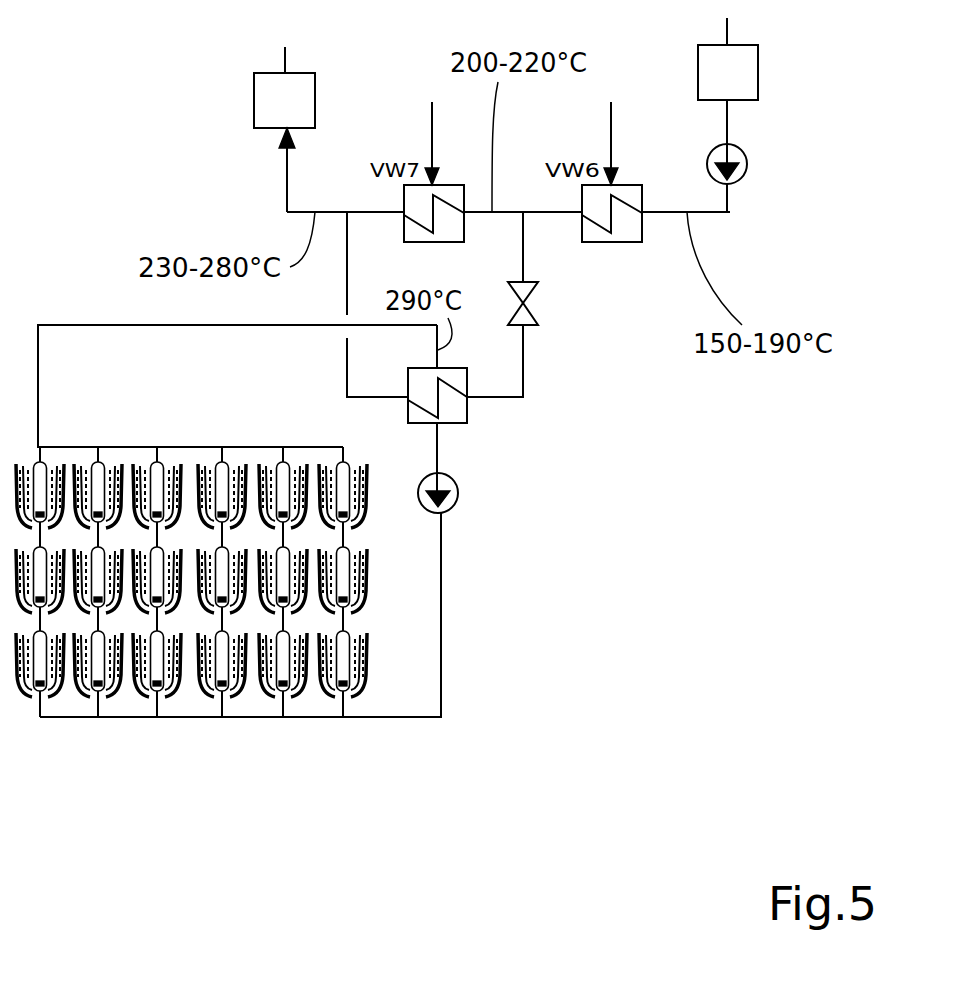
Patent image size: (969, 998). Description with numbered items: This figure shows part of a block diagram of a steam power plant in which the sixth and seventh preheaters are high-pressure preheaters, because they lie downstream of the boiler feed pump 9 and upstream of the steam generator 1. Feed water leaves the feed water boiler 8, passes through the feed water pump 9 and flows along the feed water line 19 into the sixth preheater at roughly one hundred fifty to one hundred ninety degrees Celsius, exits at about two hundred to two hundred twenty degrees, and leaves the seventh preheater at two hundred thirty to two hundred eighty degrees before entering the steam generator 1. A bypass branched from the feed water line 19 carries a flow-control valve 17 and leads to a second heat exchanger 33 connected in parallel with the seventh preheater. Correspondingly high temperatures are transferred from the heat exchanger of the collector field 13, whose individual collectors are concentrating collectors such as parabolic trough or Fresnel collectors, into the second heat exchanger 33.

The steam generator 1 is at (254, 88).
The feed water boiler 8 is at (760, 63).
The feed water pump 9 is at (747, 163).
The collector field 13 is at (300, 746).
The flow-control valve 17 is at (528, 316).
The feed water line 19 is at (730, 212).
The second heat exchanger 33 is at (467, 423).